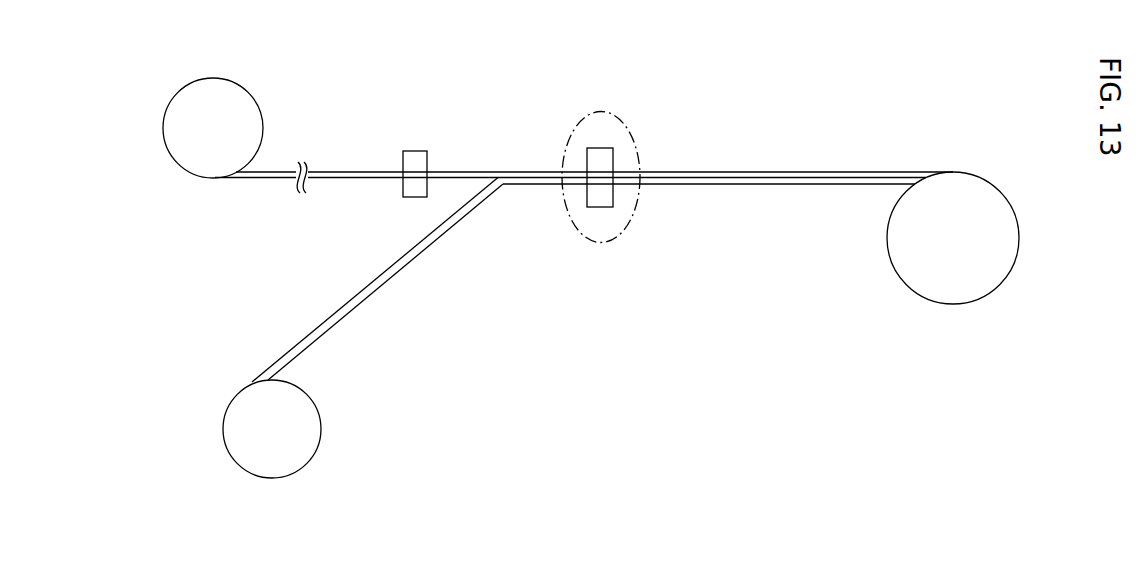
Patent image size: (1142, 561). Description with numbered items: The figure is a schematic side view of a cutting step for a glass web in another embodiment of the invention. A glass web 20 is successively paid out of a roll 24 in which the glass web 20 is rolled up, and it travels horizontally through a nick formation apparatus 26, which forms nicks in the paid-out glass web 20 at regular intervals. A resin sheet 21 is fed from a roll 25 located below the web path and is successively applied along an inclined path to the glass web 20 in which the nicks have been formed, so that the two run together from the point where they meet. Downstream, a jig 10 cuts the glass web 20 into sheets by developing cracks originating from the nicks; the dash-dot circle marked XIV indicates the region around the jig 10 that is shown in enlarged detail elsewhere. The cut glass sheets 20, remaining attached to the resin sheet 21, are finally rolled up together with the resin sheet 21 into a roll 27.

The jig 10 is at (599, 208).
The glass web 20 is at (362, 170).
The resin sheet 21 is at (414, 259).
The roll 24 is at (254, 100).
The roll 25 is at (318, 445).
The nick formation apparatus 26 is at (422, 150).
The roll 27 is at (1000, 283).
The detail view indicator XIV is at (620, 115).